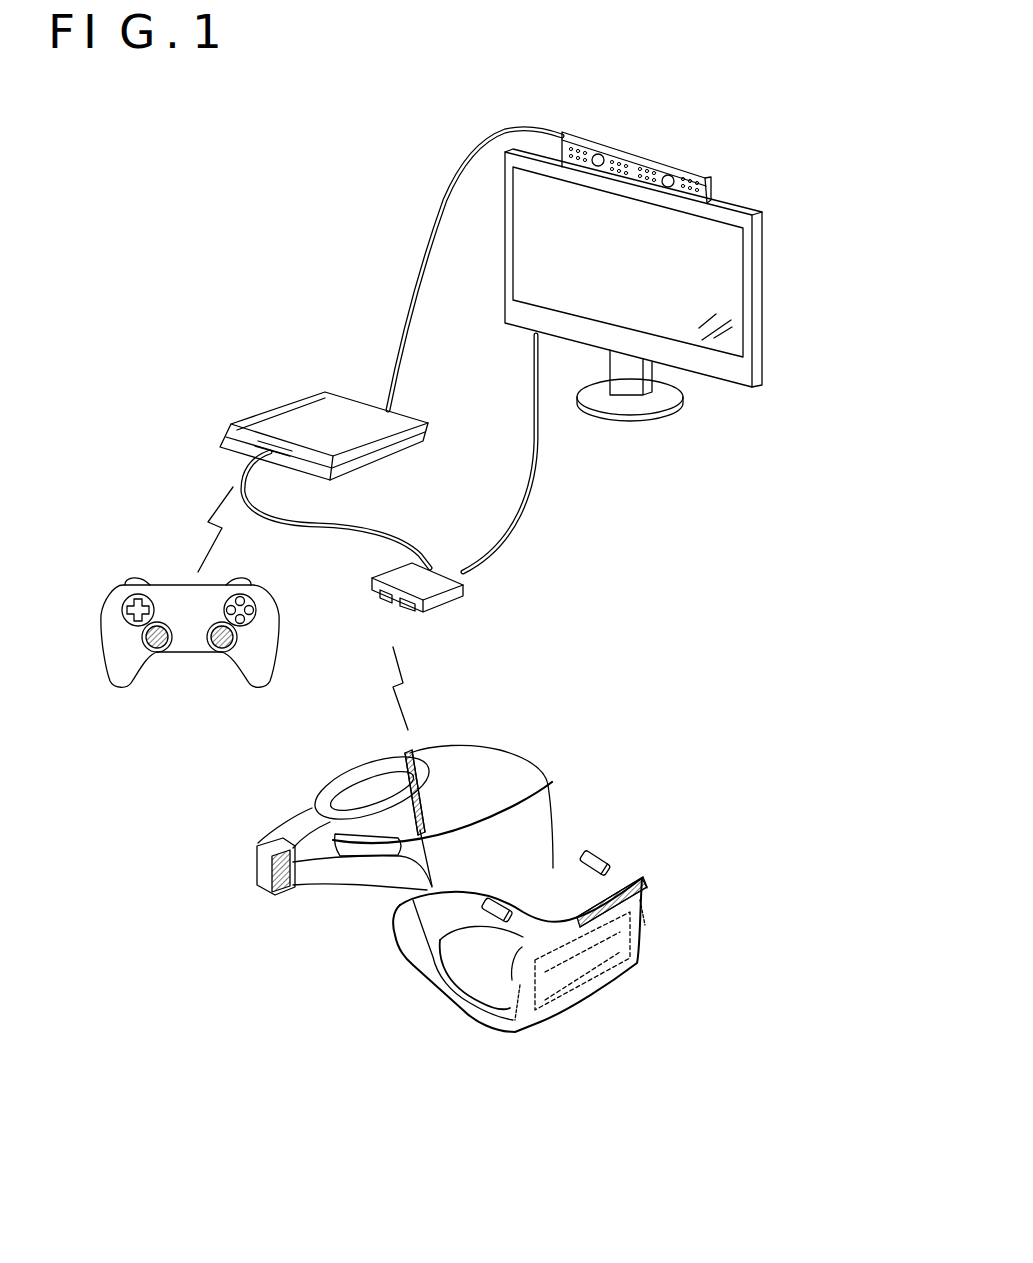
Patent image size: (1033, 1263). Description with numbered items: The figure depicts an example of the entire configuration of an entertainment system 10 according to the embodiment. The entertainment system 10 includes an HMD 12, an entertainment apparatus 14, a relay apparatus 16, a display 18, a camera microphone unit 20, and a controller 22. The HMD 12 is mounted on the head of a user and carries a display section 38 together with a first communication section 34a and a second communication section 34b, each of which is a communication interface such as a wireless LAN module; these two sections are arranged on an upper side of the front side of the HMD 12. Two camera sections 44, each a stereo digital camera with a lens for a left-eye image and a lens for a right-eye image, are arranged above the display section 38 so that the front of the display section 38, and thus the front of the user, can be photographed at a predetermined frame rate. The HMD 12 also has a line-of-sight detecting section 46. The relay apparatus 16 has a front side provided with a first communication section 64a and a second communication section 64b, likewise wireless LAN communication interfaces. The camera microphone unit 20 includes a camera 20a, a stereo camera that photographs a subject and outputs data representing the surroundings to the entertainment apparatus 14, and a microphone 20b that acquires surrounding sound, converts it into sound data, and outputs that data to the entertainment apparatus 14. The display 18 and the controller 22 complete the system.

The entertainment system 10 is at (528, 915).
The HMD 12 is at (478, 1018).
The entertainment apparatus 14 is at (272, 412).
The relay apparatus 16 is at (430, 608).
The display 18 is at (763, 297).
The camera microphone unit 20 is at (661, 162).
The camera 20a is at (597, 168).
The microphone 20b is at (628, 152).
The controller 22 is at (275, 637).
The first communication section 34a is at (522, 947).
The second communication section 34b is at (643, 880).
The display section 38 is at (593, 997).
The camera section 44 is at (497, 897).
The line-of-sight detecting section 46 is at (523, 983).
The first communication section 64a is at (387, 599).
The second communication section 64b is at (410, 605).